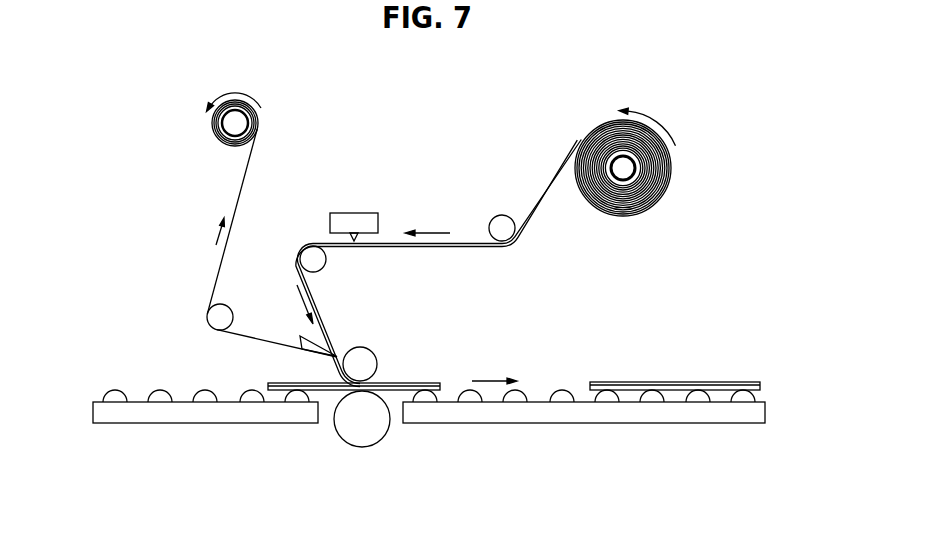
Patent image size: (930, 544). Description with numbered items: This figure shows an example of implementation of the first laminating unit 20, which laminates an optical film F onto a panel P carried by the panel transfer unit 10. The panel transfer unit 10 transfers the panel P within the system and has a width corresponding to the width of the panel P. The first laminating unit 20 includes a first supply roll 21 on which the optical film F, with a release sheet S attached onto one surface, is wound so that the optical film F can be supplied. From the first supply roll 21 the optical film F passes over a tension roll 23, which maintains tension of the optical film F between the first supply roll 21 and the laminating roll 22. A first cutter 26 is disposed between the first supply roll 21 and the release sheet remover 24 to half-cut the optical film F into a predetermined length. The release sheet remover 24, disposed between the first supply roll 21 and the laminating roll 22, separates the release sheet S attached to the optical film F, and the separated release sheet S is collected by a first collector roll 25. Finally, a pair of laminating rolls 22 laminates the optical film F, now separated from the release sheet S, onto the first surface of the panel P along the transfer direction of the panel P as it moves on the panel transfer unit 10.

The panel transfer unit 10 is at (136, 423).
The first laminating unit 20 is at (364, 150).
The first supply roll 21 is at (672, 170).
The laminating rolls 22 is at (372, 369).
The tension roll 23 is at (502, 215).
The release sheet remover 24 is at (300, 338).
The first collector roll 25 is at (258, 125).
The first cutter 26 is at (368, 212).
The release sheet S is at (217, 266).
The optical film F is at (432, 380).
The panel P is at (333, 388).